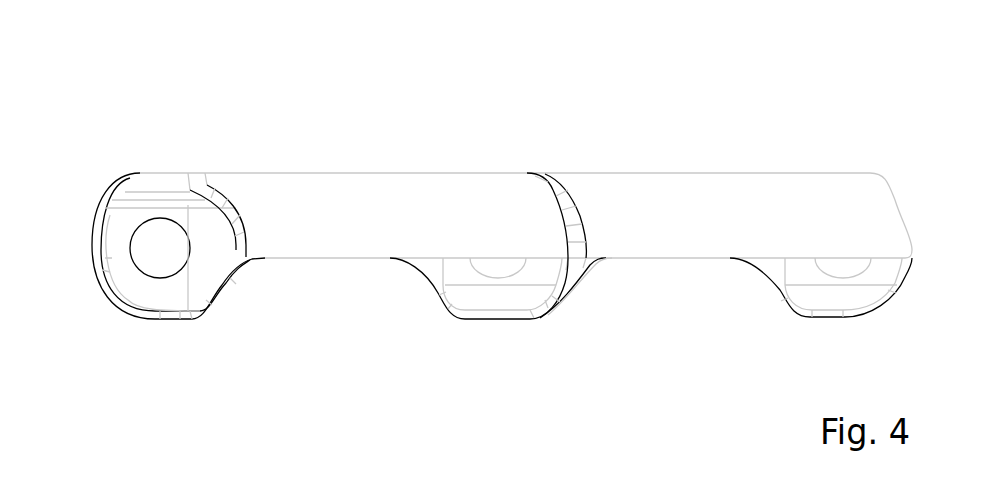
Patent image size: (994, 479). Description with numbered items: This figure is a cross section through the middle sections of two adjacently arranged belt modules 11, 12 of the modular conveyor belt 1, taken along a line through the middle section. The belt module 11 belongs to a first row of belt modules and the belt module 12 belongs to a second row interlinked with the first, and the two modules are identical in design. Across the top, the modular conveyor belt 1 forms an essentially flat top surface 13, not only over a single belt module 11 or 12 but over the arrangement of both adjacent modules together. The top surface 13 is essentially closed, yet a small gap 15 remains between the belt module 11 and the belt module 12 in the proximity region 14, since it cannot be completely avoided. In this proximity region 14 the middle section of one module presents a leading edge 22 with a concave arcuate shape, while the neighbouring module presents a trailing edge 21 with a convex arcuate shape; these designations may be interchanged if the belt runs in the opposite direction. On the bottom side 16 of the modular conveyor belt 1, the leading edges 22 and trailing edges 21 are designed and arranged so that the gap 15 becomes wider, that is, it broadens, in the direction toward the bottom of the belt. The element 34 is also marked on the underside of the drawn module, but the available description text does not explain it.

The component 1 is at (103, 82).
The first body portion 11 is at (717, 194).
The second body portion 12 is at (403, 192).
The connecting region 13 is at (493, 104).
The joint line 14 is at (538, 142).
The upper edge 15 is at (540, 173).
The lower projection 16 is at (499, 386).
The transition surface 21 is at (562, 222).
The fillet 22 is at (570, 198).
The recess 34 is at (485, 263).